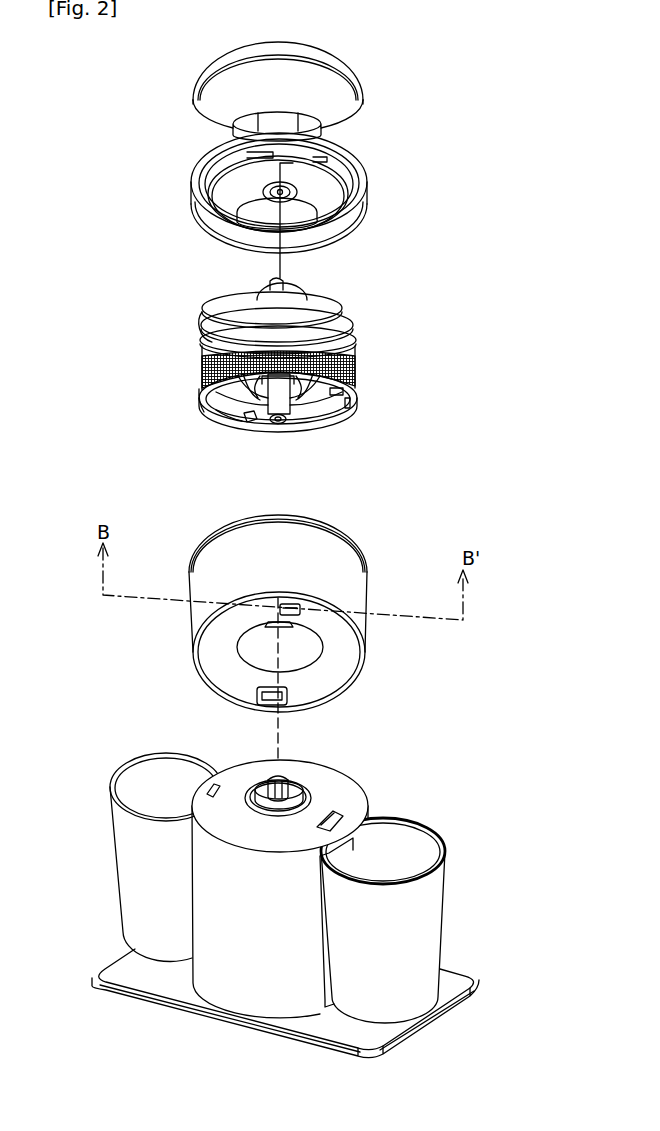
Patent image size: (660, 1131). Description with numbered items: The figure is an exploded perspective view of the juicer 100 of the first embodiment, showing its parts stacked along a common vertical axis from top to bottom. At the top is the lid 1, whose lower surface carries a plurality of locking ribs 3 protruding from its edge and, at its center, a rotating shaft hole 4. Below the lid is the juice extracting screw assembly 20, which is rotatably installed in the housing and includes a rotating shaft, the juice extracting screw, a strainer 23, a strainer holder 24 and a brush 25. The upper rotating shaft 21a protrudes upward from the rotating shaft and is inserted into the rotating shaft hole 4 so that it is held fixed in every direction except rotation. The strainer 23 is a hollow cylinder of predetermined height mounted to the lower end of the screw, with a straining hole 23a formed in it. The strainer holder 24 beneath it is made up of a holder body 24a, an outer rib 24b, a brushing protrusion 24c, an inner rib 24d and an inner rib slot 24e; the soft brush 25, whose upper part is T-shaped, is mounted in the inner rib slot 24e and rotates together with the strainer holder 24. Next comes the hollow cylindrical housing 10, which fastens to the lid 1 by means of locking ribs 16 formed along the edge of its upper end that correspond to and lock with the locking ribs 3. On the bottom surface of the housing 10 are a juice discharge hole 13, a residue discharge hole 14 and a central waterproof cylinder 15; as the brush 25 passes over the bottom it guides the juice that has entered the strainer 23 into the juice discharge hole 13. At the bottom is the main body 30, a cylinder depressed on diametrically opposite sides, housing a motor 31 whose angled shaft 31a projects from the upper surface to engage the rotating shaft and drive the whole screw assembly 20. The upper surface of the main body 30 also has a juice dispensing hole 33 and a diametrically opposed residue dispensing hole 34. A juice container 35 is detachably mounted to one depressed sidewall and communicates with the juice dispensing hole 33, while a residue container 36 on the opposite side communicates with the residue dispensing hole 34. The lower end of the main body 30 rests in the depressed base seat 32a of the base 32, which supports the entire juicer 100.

The juicer 100 is at (138, 76).
The lid 1 is at (367, 83).
The locking ribs 3 is at (352, 167).
The rotating shaft hole 4 is at (226, 230).
The juice extracting screw assembly 20 is at (345, 306).
The upper rotating shaft 21a is at (286, 282).
The strainer 23 is at (196, 376).
The straining hole 23a is at (357, 379).
The strainer holder 24 is at (352, 479).
The holder body 24a is at (200, 398).
The outer rib 24b is at (296, 424).
The brushing protrusion 24c is at (337, 398).
The inner rib 24d is at (228, 408).
The inner rib slot 24e is at (250, 424).
The brush 25 is at (352, 408).
The housing 10 is at (363, 538).
The juice discharge hole 13 is at (267, 696).
The residue discharge hole 14 is at (293, 628).
The waterproof cylinder 15 is at (253, 648).
The locking ribs 16 is at (200, 552).
The main body 30 is at (338, 784).
The motor 31 is at (245, 792).
The angled shaft 31a is at (288, 776).
The base 32 is at (468, 990).
The base seat 32a is at (325, 1000).
The juice dispensing hole 33 is at (206, 781).
The residue dispensing hole 34 is at (338, 815).
The juice container 35 is at (135, 789).
The residue container 36 is at (417, 836).